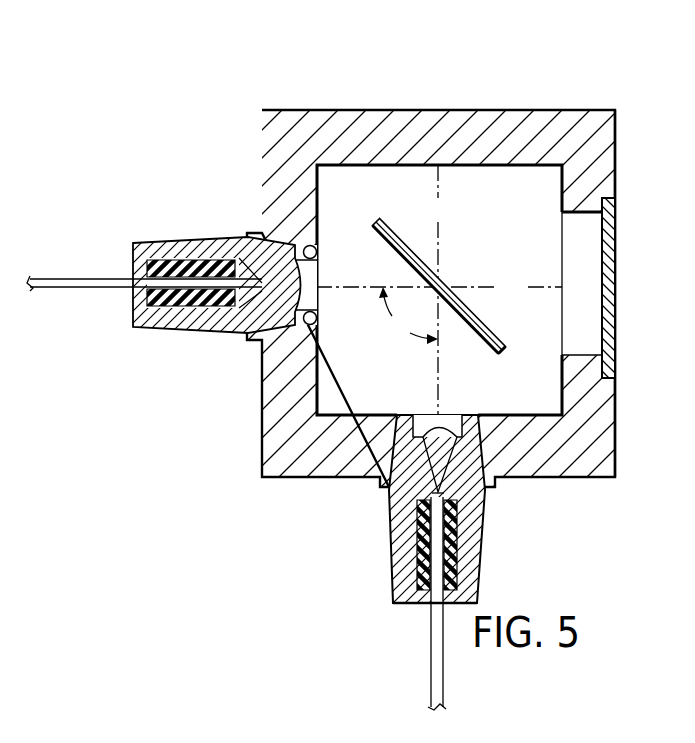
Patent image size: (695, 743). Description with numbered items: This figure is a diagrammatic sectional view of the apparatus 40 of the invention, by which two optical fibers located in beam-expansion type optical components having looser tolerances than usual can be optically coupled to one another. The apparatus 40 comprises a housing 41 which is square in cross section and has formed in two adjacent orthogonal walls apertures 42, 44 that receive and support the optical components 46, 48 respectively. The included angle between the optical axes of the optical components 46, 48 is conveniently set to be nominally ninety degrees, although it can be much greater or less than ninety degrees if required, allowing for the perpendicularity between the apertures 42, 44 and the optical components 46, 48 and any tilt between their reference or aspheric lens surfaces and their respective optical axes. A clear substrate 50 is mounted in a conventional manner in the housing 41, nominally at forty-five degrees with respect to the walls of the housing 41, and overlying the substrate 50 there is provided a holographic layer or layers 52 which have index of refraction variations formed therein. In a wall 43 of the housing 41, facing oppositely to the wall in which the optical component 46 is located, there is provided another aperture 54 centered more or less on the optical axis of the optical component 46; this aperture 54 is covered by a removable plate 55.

The apparatus 40 is at (347, 370).
The housing 41 is at (557, 111).
The aperture 42 is at (258, 288).
The wall 43 is at (606, 164).
The aperture 44 is at (402, 416).
The optical component 46 is at (179, 241).
The optical component 48 is at (484, 523).
The clear substrate 50 is at (472, 342).
The holographic layer 52 is at (497, 338).
The aperture 54 is at (585, 215).
The removable plate 55 is at (616, 254).